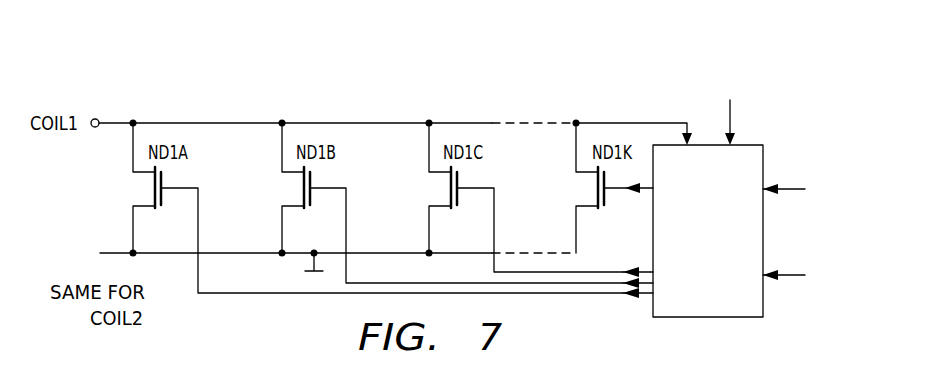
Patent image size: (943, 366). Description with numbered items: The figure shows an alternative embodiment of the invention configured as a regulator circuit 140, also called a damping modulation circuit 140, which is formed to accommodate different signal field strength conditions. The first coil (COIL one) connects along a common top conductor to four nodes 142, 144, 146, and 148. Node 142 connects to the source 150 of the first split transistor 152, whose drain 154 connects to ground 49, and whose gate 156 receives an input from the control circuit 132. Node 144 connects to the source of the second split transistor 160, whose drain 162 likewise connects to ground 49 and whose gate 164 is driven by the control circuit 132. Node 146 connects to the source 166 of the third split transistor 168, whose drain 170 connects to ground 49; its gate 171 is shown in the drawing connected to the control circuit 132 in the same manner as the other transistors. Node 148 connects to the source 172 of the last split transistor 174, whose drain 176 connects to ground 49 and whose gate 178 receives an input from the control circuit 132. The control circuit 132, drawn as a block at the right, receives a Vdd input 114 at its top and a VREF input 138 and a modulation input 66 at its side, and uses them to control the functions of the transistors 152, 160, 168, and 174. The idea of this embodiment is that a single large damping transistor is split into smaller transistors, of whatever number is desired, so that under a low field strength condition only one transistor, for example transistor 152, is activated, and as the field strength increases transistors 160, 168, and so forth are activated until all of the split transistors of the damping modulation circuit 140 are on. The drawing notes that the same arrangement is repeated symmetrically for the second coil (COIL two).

The node 142 is at (131, 120).
The node 144 is at (280, 120).
The node 146 is at (427, 120).
The node 148 is at (574, 120).
The source 150 is at (131, 148).
The ND1A transistor 152 is at (128, 190).
The drain 154 is at (131, 232).
The gate 156 is at (280, 148).
The ND1B transistor 160 is at (278, 190).
The drain 162 is at (280, 232).
The gate 164 is at (320, 198).
The source 166 is at (427, 148).
The ND1C transistor 168 is at (425, 190).
The drain 170 is at (427, 232).
The gate control line of ND1C 171 is at (487, 198).
The source 172 is at (575, 148).
The ND1K transistor 174 is at (572, 190).
The drain 176 is at (575, 232).
The gate 178 is at (616, 198).
The ground 49 is at (302, 267).
The regulator circuit 140 is at (713, 55).
The Vdd input 114 is at (733, 117).
The control circuit 132 is at (765, 166).
The VREF input 138 is at (789, 192).
The modulation input 66 is at (787, 278).